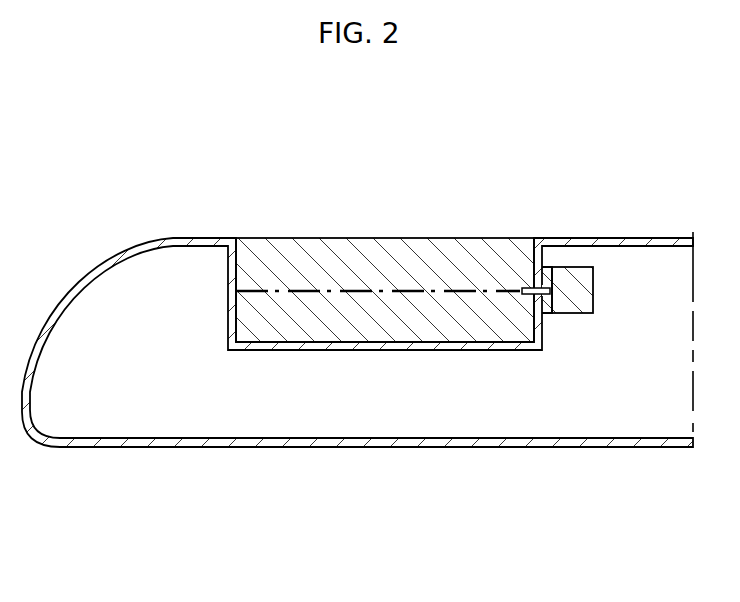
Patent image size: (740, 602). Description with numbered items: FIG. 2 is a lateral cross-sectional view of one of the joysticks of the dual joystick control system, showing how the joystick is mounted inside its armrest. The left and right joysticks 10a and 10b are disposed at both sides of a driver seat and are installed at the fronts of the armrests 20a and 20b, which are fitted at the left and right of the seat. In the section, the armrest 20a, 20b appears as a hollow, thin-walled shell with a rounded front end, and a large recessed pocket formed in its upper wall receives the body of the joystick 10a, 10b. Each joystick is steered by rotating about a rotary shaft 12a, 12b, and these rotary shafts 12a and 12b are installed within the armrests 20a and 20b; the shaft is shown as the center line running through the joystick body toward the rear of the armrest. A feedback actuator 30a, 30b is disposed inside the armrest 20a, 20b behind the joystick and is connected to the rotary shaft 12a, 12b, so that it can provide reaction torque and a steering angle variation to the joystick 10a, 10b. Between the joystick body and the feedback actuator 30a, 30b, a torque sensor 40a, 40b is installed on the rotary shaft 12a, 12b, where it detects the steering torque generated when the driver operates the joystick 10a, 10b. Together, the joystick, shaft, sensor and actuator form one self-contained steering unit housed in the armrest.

The left joystick 10a is at (385, 216).
The right joystick 10b is at (413, 222).
The rotary shaft 12a is at (377, 218).
The rotary shaft 12b is at (305, 290).
The armrest 20a is at (357, 407).
The armrest 20b is at (222, 447).
The feedback actuator 30a is at (587, 395).
The feedback actuator 30b is at (573, 315).
The torque sensor 40a is at (572, 233).
The torque sensor 40b is at (550, 273).